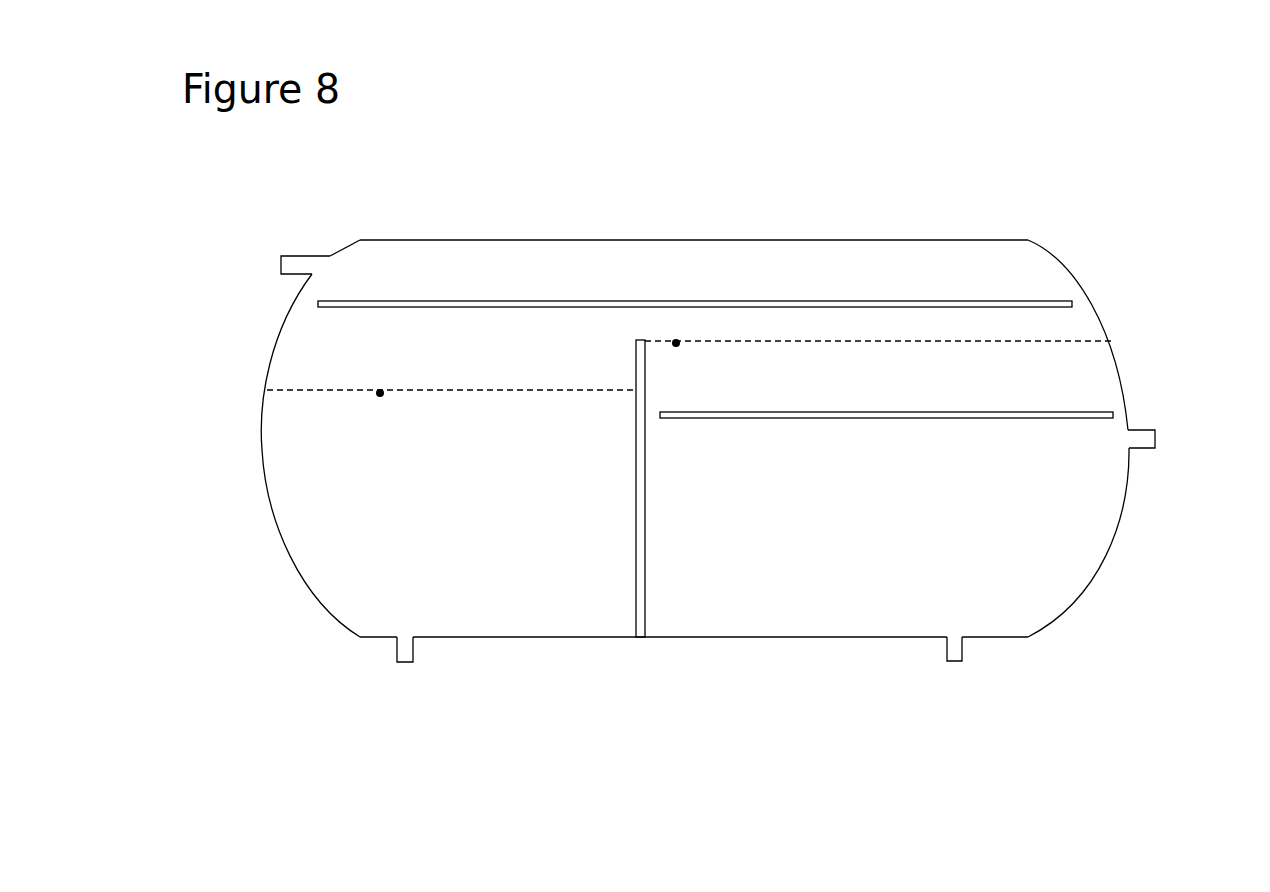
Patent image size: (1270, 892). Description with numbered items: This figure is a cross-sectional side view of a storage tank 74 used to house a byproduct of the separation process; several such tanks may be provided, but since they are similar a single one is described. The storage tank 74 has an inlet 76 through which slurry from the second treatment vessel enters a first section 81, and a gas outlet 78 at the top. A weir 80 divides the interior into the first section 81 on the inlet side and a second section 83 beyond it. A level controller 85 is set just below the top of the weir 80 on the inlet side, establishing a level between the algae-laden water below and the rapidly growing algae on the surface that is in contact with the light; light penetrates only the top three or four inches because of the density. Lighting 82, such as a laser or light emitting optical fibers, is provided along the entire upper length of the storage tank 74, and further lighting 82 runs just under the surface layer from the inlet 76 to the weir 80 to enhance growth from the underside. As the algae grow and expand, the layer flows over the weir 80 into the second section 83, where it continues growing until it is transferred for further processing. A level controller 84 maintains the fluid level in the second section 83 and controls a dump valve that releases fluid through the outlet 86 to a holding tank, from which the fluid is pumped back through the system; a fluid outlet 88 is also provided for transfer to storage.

The storage tank 74 is at (753, 240).
The inlet 76 is at (1143, 430).
The gas outlet 78 is at (302, 256).
The weir 80 is at (645, 522).
The first section 81 is at (855, 555).
The lighting 82 is at (516, 300).
The second section 83 is at (510, 520).
The level controller 84 is at (380, 394).
The level controller 85 is at (676, 343).
The outlet 86 is at (397, 652).
The fluid outlet to storage 88 is at (962, 652).